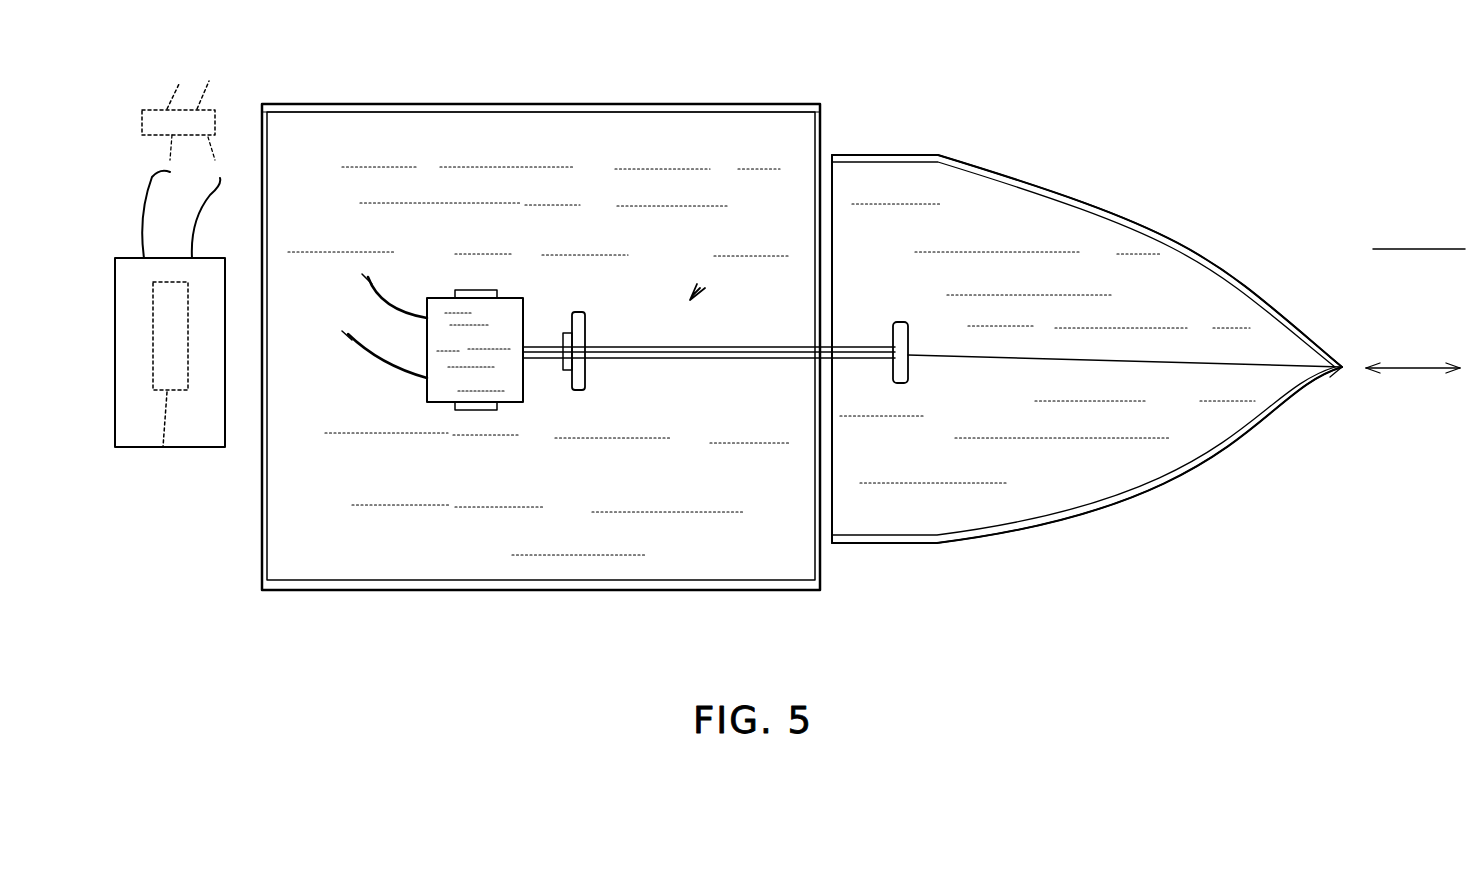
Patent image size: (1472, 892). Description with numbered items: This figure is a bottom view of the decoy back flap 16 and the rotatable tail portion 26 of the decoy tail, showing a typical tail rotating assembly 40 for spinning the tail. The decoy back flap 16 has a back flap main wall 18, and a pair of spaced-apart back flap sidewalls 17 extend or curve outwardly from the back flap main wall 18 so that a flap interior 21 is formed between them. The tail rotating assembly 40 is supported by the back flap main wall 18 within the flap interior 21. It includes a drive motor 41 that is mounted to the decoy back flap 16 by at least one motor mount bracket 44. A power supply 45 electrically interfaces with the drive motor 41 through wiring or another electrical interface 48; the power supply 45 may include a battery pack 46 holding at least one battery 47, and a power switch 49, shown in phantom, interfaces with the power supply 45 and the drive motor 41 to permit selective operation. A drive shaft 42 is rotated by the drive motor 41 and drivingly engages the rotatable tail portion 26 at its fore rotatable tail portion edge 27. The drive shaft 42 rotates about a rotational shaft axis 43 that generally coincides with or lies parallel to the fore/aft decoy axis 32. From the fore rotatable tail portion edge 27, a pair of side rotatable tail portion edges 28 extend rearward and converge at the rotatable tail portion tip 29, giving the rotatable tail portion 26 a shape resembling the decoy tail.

The decoy back flap 16 is at (395, 103).
The back flap sidewalls 17 is at (715, 100).
The flap interior 21 is at (620, 118).
The fore rotatable tail portion edge 27 is at (830, 203).
The rotatable tail portion 26 is at (1140, 214).
The side rotatable tail portion edges 28 is at (1063, 195).
The rotatable tail portion tip 29 is at (1342, 367).
The fore/aft decoy axis 32 is at (1425, 248).
The rotational shaft axis 43 is at (1412, 367).
The tail rotating assembly 40 is at (690, 300).
The back flap main wall 18 is at (656, 336).
The drive shaft 42 is at (775, 360).
The drive motor 41 is at (508, 380).
The motor mount bracket 44 is at (482, 292).
The electrical interface 48 is at (345, 330).
The power switch 49 is at (176, 82).
The power supply 45 is at (216, 447).
The battery pack 46 is at (188, 415).
The battery 47 is at (165, 443).